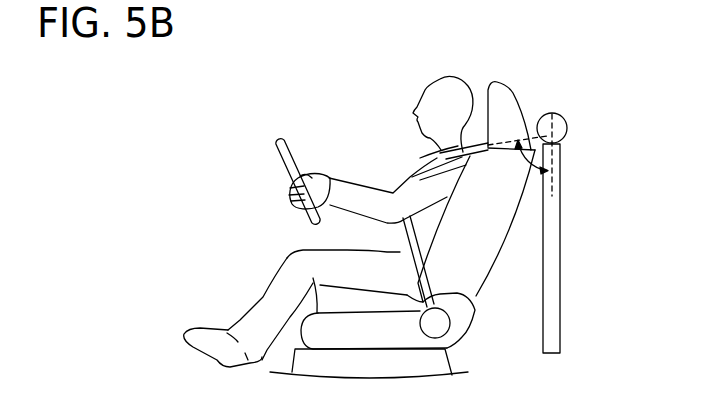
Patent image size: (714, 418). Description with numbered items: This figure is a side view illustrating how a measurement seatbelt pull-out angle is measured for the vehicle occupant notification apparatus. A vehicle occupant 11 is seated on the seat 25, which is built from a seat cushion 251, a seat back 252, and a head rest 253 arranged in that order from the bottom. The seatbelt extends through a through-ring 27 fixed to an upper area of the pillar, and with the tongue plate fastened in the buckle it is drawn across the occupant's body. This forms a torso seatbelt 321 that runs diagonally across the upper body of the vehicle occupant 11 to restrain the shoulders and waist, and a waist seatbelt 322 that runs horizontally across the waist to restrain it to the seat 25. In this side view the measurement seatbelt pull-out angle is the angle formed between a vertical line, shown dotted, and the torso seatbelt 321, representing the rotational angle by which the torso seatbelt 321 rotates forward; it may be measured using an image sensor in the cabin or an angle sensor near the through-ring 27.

The vehicle occupant 11 is at (278, 268).
The seat 25 is at (443, 198).
The seat cushion 251 is at (473, 323).
The seat back 252 is at (505, 238).
The head rest 253 is at (517, 90).
The through-ring 27 is at (568, 127).
The torso seatbelt 321 is at (479, 140).
The waist seatbelt 322 is at (385, 249).